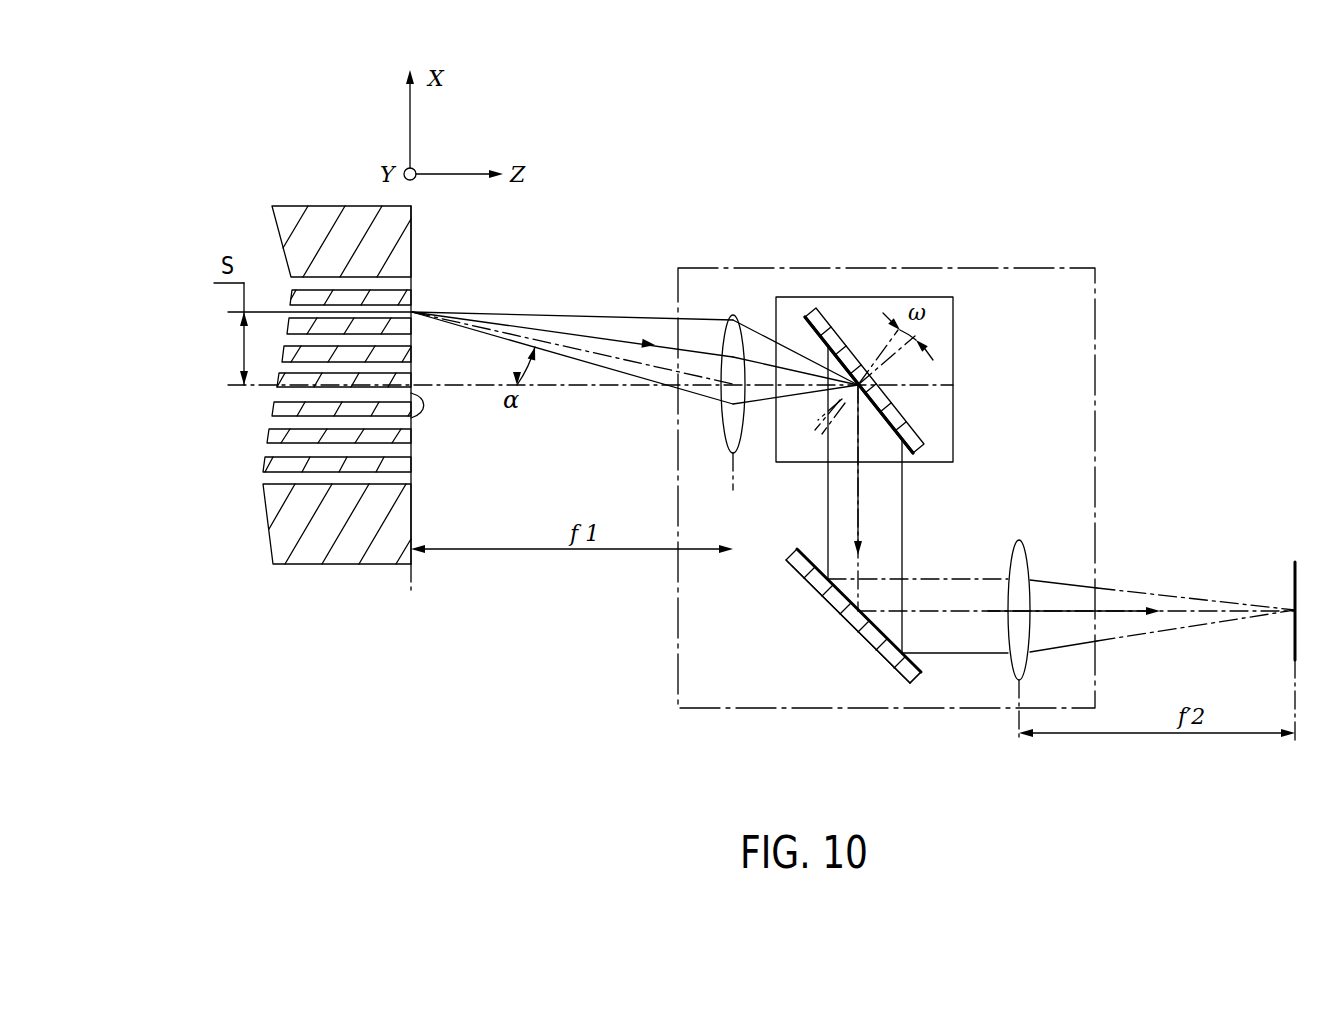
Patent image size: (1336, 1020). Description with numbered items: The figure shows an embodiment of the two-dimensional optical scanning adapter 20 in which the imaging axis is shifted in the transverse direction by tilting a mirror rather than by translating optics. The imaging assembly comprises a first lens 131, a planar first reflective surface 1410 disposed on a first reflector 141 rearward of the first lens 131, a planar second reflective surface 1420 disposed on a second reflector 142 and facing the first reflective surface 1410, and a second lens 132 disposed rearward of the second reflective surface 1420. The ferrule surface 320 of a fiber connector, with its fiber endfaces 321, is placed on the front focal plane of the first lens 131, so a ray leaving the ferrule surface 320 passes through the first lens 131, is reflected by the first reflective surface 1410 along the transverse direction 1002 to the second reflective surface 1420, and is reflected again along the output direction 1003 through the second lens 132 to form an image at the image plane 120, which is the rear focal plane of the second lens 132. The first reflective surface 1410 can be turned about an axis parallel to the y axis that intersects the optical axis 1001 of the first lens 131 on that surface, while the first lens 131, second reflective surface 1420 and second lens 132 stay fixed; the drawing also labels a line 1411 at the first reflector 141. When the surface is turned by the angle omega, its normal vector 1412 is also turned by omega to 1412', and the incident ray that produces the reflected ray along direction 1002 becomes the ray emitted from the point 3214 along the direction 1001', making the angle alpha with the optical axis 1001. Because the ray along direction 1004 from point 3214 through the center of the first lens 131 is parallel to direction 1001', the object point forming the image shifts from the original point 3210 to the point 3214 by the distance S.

The optical scanning adapter 20 is at (678, 628).
The image plane 120 is at (1295, 580).
The first lens 131 is at (723, 322).
The second lens 132 is at (1030, 562).
The first reflector 141 is at (912, 418).
The second reflector 142 is at (866, 645).
The ferrule surface 320 is at (411, 509).
The fiber endfaces 321 is at (411, 453).
The optical axis 1001 is at (572, 259).
The incident ray direction 1001' is at (795, 259).
The transverse direction 1002 is at (858, 500).
The output light beam 1003 is at (988, 611).
The ray direction through lens center 1004 is at (622, 360).
The first reflective surface 1410 is at (806, 322).
The reflective surface of tilting mirror 1411 is at (855, 345).
The normal vector 1412 is at (843, 594).
The turned normal vector 1412' is at (746, 579).
The second reflective surface 1420 is at (923, 662).
The original point 3210 is at (411, 420).
The shifted object point 3214 is at (412, 312).